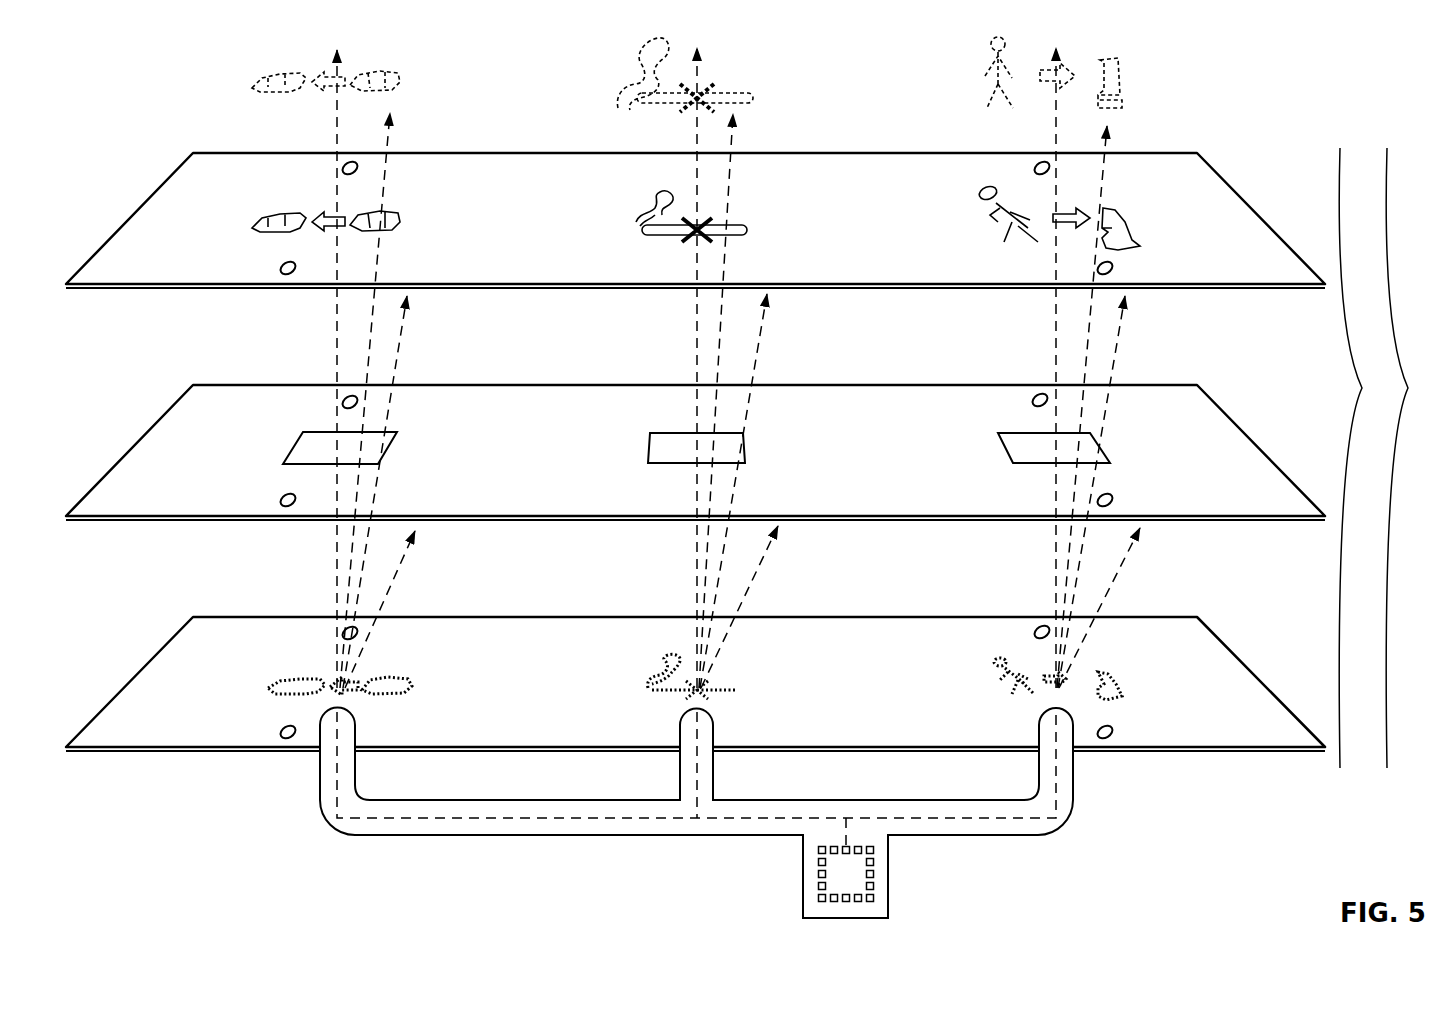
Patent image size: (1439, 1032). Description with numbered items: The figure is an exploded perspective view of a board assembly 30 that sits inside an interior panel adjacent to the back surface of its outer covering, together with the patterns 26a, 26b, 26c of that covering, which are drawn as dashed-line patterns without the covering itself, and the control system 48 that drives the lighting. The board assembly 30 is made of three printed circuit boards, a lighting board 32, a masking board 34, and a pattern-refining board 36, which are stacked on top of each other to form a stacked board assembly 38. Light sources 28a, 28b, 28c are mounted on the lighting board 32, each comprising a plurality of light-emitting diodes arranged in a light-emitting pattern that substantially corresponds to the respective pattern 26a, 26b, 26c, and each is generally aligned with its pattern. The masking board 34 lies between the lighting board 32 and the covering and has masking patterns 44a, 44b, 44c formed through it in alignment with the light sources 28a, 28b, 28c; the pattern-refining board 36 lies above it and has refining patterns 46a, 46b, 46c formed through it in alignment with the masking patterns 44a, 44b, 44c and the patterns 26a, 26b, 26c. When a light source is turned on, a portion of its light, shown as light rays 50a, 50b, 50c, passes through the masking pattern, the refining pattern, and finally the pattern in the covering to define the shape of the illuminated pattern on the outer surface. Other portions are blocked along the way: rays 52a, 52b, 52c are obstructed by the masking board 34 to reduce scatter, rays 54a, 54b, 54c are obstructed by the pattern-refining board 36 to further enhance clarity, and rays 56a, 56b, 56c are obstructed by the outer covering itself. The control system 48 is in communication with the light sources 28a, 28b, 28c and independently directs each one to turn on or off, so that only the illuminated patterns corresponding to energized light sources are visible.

The pattern 26a is at (382, 60).
The pattern 26b is at (715, 60).
The pattern 26c is at (1148, 60).
The light source 28a is at (368, 660).
The light source 28b is at (718, 675).
The light source 28c is at (1082, 675).
The board assembly 30 is at (1368, 458).
The lighting board 32 is at (122, 734).
The masking board 34 is at (122, 502).
The pattern-refining board 36 is at (122, 270).
The stacked board assembly 38 is at (1412, 458).
The masking pattern 44a is at (405, 452).
The masking pattern 44b is at (757, 452).
The masking pattern 44c is at (1115, 452).
The refining pattern 46a is at (306, 195).
The refining pattern 46b is at (652, 188).
The refining pattern 46c is at (975, 190).
The control system 48 is at (872, 876).
The light ray 50a is at (337, 132).
The light ray 50b is at (697, 118).
The light ray 50c is at (1056, 120).
The ray 52a is at (397, 570).
The ray 52b is at (755, 572).
The ray 52c is at (1113, 570).
The ray 54a is at (405, 318).
The ray 54b is at (763, 320).
The ray 54c is at (1120, 322).
The light ray 56a is at (388, 133).
The light ray 56b is at (732, 135).
The light ray 56c is at (1107, 138).